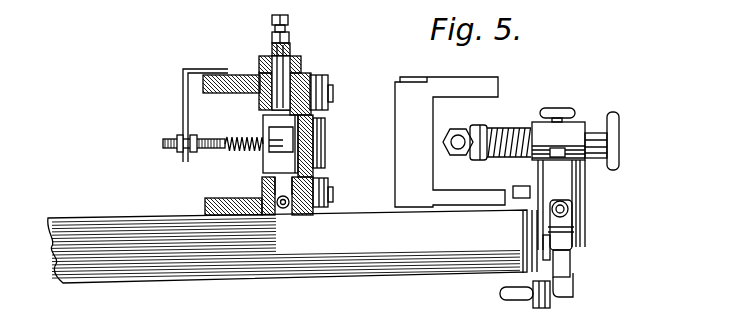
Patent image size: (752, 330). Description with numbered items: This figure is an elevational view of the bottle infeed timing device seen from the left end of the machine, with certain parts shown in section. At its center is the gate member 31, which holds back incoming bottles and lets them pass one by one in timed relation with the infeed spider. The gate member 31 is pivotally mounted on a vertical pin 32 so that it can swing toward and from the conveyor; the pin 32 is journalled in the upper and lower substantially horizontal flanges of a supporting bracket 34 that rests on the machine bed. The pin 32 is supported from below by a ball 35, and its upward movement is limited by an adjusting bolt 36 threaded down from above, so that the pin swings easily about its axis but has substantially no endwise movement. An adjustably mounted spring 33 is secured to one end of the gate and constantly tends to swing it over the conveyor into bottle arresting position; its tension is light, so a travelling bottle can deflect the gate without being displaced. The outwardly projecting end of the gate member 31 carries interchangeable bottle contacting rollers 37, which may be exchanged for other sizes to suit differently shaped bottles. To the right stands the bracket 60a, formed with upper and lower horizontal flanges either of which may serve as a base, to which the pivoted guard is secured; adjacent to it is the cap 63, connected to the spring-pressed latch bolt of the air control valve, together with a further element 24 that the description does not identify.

The valve 24 is at (573, 132).
The gate member 31 is at (327, 160).
The pin 32 is at (306, 78).
The spring 33 is at (242, 128).
The supporting bracket 34 is at (241, 203).
The ball 35 is at (281, 208).
The adjusting bolt 36 is at (291, 55).
The bottle contacting rollers 37 is at (333, 195).
The bracket 60a is at (470, 204).
The cap 63 is at (481, 126).